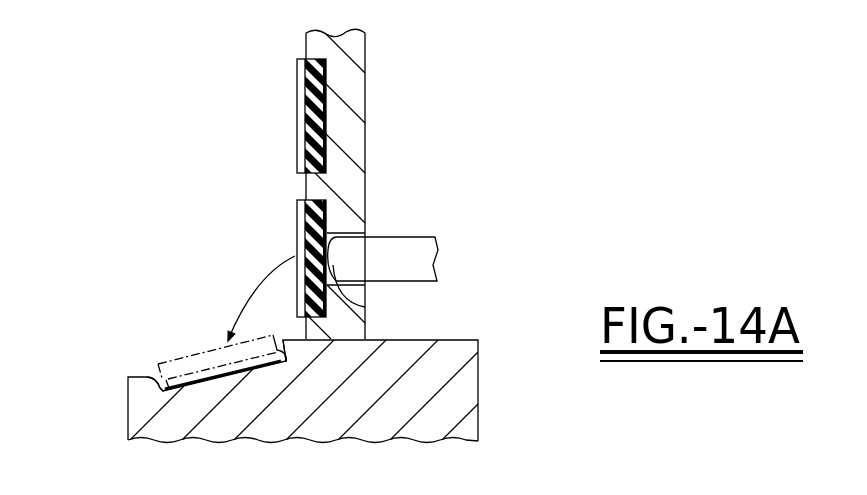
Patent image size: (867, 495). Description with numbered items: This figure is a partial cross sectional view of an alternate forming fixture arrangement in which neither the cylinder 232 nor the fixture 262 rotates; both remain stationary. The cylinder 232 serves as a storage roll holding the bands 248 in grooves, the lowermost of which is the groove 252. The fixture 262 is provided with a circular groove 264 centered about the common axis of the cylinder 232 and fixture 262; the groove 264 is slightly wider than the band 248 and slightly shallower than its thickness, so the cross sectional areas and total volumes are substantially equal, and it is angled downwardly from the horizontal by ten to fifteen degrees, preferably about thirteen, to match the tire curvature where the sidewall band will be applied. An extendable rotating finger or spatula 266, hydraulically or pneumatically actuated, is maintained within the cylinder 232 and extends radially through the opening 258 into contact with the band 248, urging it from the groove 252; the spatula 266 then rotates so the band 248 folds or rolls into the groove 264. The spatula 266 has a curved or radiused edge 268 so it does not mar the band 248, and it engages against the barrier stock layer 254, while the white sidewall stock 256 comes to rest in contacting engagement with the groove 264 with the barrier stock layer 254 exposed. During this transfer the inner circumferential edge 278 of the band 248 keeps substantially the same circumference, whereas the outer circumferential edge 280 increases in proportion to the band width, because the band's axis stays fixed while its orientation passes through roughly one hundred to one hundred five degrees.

The cylinder 232 is at (367, 48).
The band 248 is at (297, 87).
The groove 252 is at (327, 82).
The barrier stock layer 254 is at (310, 233).
The white sidewall stock 256 is at (297, 212).
The opening 258 is at (333, 232).
The fixture 262 is at (480, 412).
The groove 264 is at (148, 376).
The spatula 266 is at (427, 256).
The curved edge 268 is at (365, 306).
The inner circumferential edge 278 is at (286, 365).
The outer circumferential edge 280 is at (153, 370).